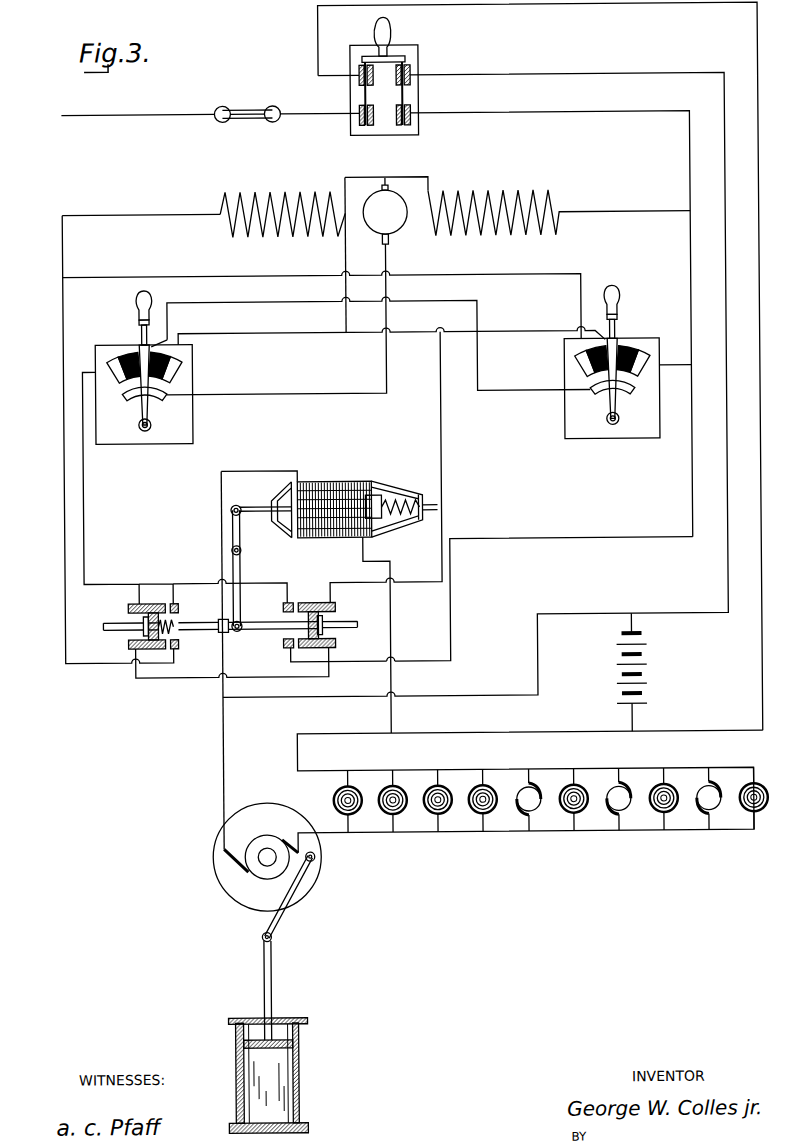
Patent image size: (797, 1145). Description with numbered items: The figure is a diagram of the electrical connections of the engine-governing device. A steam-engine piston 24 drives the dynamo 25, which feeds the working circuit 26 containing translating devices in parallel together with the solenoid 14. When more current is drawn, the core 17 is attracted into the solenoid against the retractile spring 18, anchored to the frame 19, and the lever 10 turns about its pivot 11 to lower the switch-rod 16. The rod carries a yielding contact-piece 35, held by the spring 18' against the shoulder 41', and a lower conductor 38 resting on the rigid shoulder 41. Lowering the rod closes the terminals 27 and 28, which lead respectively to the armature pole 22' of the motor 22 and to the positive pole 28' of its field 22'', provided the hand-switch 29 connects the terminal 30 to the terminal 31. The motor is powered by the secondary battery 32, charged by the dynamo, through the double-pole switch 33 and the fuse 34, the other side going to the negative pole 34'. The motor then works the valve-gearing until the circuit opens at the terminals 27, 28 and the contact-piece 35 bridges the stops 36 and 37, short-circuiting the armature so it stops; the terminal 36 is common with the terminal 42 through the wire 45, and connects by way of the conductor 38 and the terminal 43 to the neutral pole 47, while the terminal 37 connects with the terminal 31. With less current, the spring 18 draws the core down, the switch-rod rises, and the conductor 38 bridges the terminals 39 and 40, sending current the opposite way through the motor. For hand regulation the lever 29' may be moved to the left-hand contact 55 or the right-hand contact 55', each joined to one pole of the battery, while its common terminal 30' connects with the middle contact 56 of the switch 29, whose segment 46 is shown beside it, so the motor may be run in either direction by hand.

The lever 10 is at (241, 530).
The pivot 11 is at (242, 549).
The solenoid 14 is at (347, 500).
The switch-rod 16 is at (103, 625).
The core 17 is at (380, 500).
The retractile spring 18 is at (410, 490).
The spring 18' is at (185, 590).
The frame 19 is at (438, 510).
The motor 22 is at (385, 214).
The armature pole 22' is at (543, 212).
The field 22'' is at (282, 205).
The steam-engine piston 24 is at (240, 1042).
The dynamo 25 is at (267, 857).
The working circuit 26 is at (551, 799).
The terminal 27 is at (179, 606).
The terminal 28 is at (191, 647).
The positive pole 28' is at (127, 216).
The hand-switch 29 is at (159, 360).
The lever 29' is at (596, 359).
The terminal 30 is at (137, 408).
The common terminal 30' is at (624, 394).
The terminal 31 is at (117, 362).
The secondary battery 32 is at (644, 668).
The double-pole switch 33 is at (416, 100).
The fuse 34 is at (247, 105).
The negative pole 34' is at (564, 325).
The yielding contact-piece 35 is at (150, 602).
The stop 36 is at (128, 642).
The stop 37 is at (128, 606).
The conductor 38 is at (312, 602).
The terminal 39 is at (280, 644).
The terminal 40 is at (283, 605).
The shoulder 41 is at (351, 622).
The shoulder 41' is at (125, 658).
The terminal 42 is at (352, 641).
The terminal 43 is at (335, 605).
The wire 45 is at (187, 677).
The contact segment 46 is at (181, 366).
The neutral pole 47 is at (386, 174).
The left-hand contact 55 is at (572, 362).
The right-hand contact 55' is at (653, 358).
The middle contact 56 is at (137, 350).